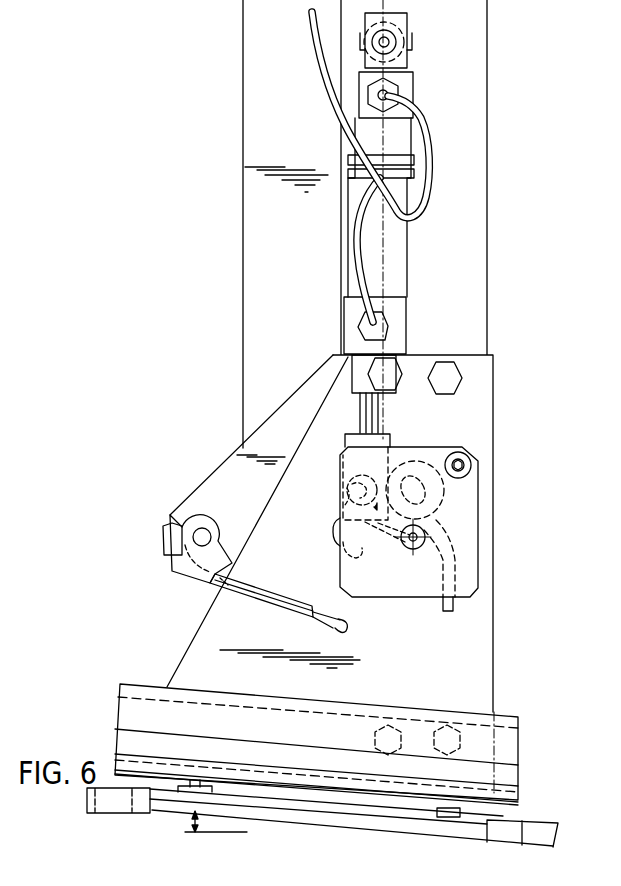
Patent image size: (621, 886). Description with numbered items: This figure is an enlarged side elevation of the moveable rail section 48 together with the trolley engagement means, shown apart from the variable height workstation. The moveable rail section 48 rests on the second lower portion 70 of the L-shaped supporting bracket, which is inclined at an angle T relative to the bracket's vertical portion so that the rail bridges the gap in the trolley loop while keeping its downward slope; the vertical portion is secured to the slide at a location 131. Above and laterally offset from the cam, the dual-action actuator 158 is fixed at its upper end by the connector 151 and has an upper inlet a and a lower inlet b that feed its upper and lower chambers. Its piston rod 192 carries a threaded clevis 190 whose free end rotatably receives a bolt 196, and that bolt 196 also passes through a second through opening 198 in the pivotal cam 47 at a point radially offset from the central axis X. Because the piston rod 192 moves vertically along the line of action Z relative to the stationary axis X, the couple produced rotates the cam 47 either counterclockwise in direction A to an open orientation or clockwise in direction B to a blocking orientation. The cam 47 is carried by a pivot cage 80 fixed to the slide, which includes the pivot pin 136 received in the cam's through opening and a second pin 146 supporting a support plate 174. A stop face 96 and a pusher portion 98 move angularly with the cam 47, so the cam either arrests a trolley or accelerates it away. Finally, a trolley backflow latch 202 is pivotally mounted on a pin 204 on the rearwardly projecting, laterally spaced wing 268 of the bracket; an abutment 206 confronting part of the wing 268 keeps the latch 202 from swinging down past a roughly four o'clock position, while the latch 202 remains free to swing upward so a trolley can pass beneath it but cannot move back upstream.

The connector 151 is at (397, 41).
The dual-action actuator 158 is at (401, 243).
The location 131 is at (431, 364).
The piston rod 192 is at (380, 413).
The clevis 190 is at (391, 441).
The pivot cage 80 is at (455, 442).
The second pin 146 is at (472, 465).
The support plate 174 is at (394, 597).
The second through opening 198 is at (360, 492).
The bolt 196 is at (345, 503).
The pivotal cam 47 is at (326, 527).
The pusher portion 98 is at (344, 556).
The pivot pin 136 is at (405, 548).
The stop face 96 is at (444, 611).
The wing 268 is at (208, 493).
The pin 204 is at (209, 533).
The abutment 206 is at (170, 530).
The trolley backflow latch 202 is at (186, 587).
The moveable rail section 48 is at (403, 705).
The second lower portion 70 is at (320, 783).
The upper inlet a is at (387, 95).
The lower inlet b is at (376, 314).
The line of action Z is at (375, 243).
The counterclockwise rotational direction A is at (371, 466).
The clockwise rotational direction B is at (463, 508).
The central axis X is at (421, 532).
The angle T is at (193, 826).